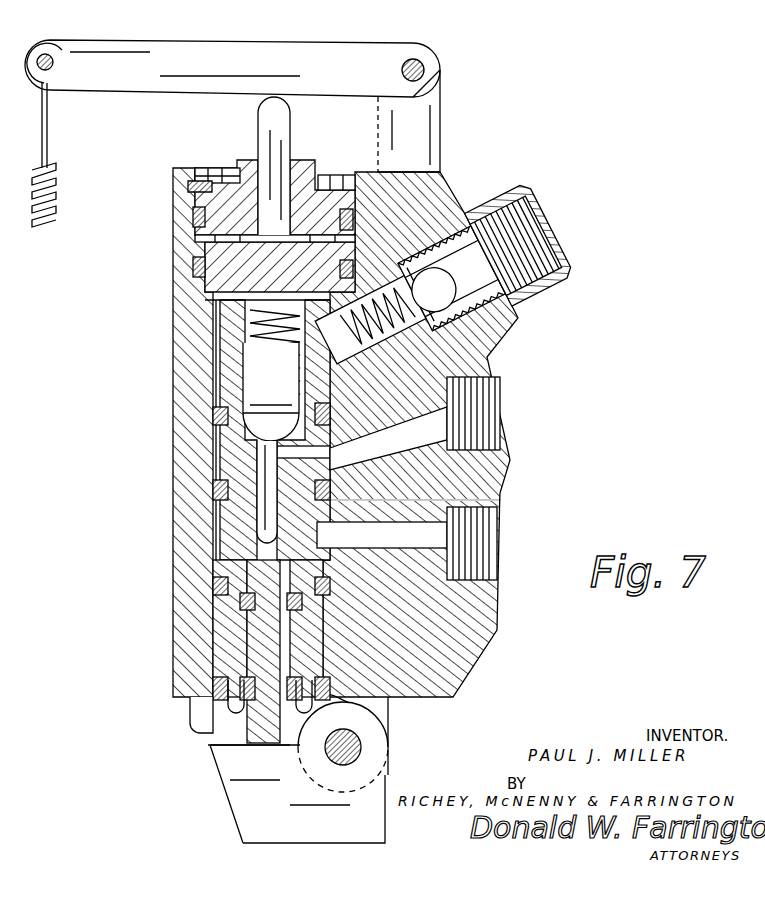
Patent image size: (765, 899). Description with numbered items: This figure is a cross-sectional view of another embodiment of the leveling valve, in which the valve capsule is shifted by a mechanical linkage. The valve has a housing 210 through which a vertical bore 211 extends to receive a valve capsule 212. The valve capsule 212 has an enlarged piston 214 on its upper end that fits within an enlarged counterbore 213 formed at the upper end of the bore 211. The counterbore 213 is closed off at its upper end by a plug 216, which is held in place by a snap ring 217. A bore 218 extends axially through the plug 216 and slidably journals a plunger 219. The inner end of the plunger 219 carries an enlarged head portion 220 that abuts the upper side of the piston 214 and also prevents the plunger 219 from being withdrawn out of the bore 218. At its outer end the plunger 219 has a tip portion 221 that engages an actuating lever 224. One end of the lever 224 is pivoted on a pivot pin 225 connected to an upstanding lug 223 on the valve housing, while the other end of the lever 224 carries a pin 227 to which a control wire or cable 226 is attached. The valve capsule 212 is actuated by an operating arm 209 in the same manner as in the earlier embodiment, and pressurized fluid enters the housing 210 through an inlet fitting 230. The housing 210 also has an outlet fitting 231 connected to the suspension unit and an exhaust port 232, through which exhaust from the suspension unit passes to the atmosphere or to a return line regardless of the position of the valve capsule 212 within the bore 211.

The operating arm 209 is at (242, 803).
The housing 210 is at (185, 415).
The vertical bore 211 is at (215, 536).
The valve capsule 212 is at (228, 456).
The counterbore 213 is at (200, 302).
The piston 214 is at (196, 254).
The plug 216 is at (193, 203).
The snap ring 217 is at (222, 178).
The bore 218 is at (288, 162).
The plunger 219 is at (262, 128).
The head portion 220 is at (258, 244).
The tip portion 221 is at (292, 100).
The upstanding lug 223 is at (440, 130).
The actuating lever 224 is at (278, 46).
The pivot pin 225 is at (425, 70).
The control wire or cable 226 is at (48, 142).
The pin 227 is at (52, 55).
The inlet fitting 230 is at (568, 292).
The outlet fitting 231 is at (505, 424).
The exhaust port 232 is at (500, 528).